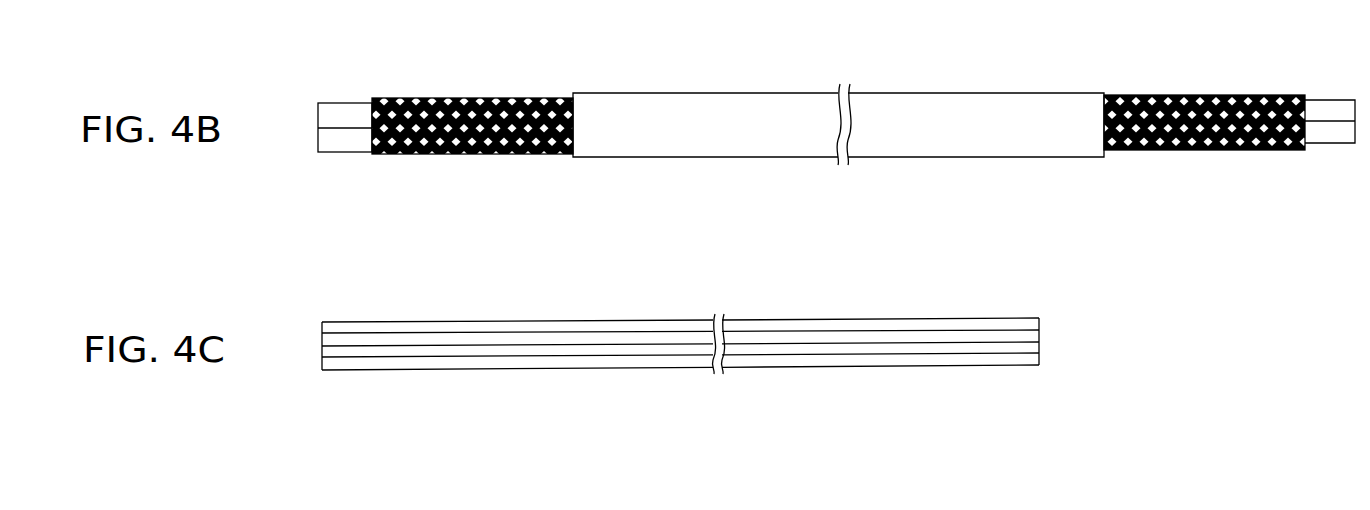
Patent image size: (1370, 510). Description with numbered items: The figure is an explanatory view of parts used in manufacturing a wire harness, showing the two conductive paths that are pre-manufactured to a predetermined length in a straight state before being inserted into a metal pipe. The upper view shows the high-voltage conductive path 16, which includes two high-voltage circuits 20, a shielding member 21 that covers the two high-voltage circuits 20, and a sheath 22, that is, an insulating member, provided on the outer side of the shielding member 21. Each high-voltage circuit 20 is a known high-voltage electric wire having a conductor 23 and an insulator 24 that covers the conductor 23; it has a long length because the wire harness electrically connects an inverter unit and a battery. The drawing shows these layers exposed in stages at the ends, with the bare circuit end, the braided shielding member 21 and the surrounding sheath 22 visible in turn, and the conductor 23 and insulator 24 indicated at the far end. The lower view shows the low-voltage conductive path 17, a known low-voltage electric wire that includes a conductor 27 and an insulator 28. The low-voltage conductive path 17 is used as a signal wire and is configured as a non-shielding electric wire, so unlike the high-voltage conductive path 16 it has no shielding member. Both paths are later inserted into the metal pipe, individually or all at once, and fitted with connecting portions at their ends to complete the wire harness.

In FIG. 4B, the high-voltage conductive path 16 is at (921, 72).
In FIG. 4C, the low-voltage conductive path 17 is at (797, 340).
In FIG. 4B, the high-voltage circuit 20 is at (352, 137).
In FIG. 4B, the shielding member 21 is at (503, 97).
In FIG. 4B, the sheath 22 is at (730, 105).
In FIG. 4B, the conductor 23 is at (1327, 134).
In FIG. 4B, the insulator 24 is at (1346, 134).
In FIG. 4C, the conductor 27 is at (458, 363).
In FIG. 4C, the insulator 28 is at (518, 363).